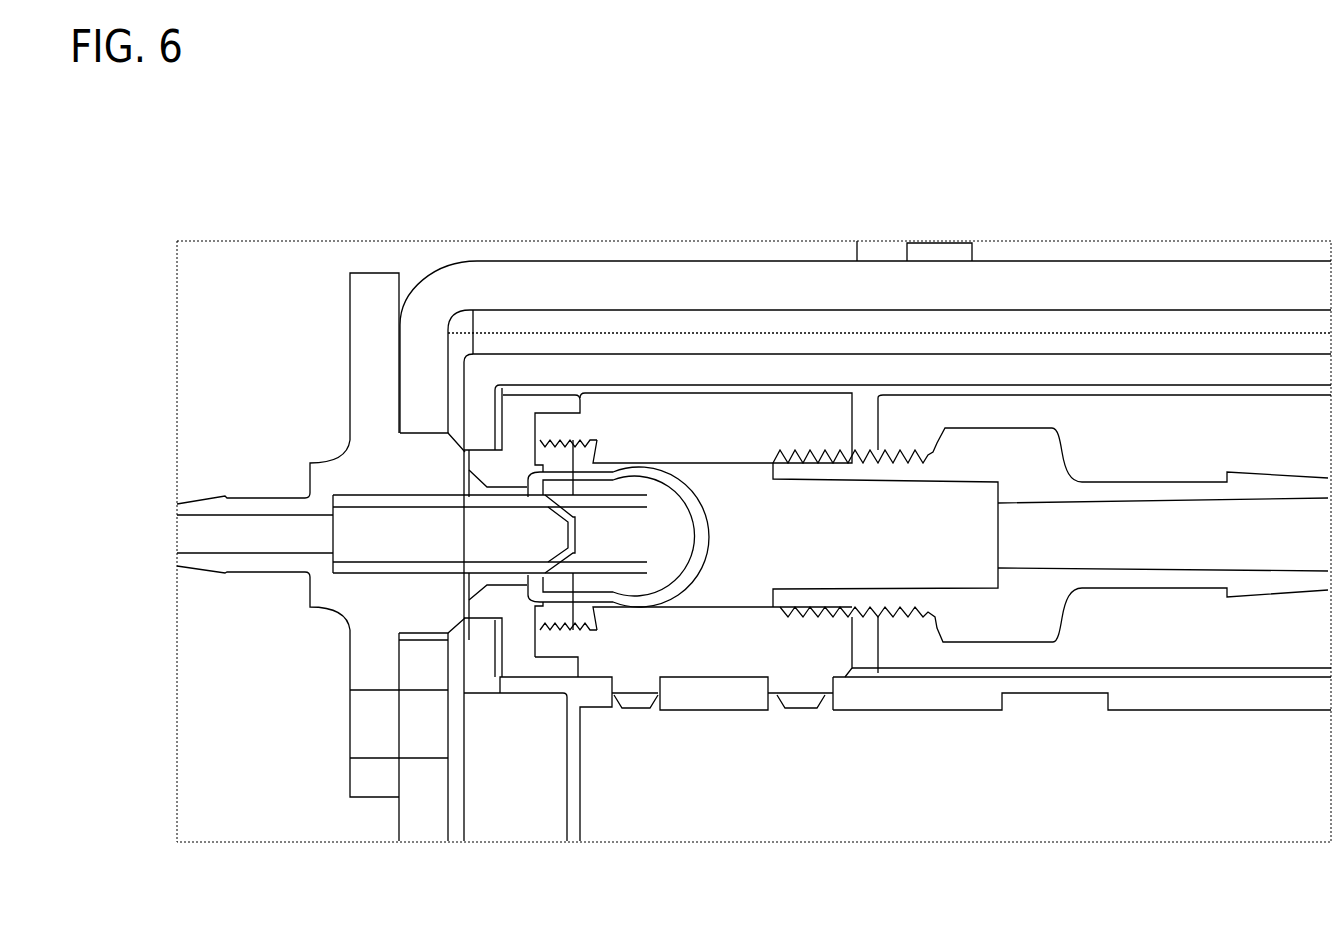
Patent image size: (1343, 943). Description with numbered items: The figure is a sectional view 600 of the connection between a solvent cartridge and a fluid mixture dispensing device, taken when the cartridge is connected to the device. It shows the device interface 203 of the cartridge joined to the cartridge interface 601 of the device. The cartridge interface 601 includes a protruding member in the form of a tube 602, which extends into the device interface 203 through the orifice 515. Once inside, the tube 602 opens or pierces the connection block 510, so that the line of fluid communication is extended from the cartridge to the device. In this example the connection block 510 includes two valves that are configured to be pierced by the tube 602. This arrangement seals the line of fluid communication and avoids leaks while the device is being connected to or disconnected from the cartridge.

The view 600 is at (791, 104).
The device interface 203 is at (518, 260).
The cartridge interface 601 is at (360, 395).
The tube 602 is at (417, 540).
The orifice 515 is at (463, 575).
The connection block 510 is at (660, 507).